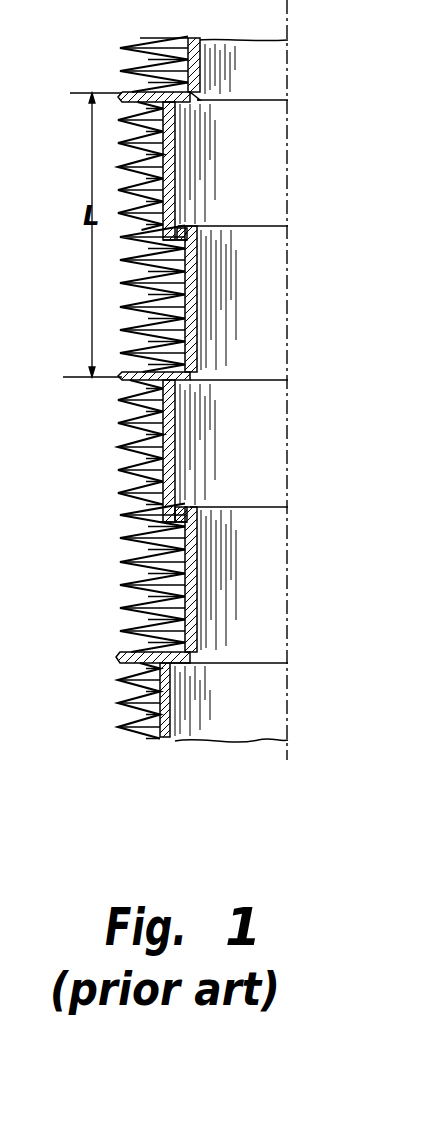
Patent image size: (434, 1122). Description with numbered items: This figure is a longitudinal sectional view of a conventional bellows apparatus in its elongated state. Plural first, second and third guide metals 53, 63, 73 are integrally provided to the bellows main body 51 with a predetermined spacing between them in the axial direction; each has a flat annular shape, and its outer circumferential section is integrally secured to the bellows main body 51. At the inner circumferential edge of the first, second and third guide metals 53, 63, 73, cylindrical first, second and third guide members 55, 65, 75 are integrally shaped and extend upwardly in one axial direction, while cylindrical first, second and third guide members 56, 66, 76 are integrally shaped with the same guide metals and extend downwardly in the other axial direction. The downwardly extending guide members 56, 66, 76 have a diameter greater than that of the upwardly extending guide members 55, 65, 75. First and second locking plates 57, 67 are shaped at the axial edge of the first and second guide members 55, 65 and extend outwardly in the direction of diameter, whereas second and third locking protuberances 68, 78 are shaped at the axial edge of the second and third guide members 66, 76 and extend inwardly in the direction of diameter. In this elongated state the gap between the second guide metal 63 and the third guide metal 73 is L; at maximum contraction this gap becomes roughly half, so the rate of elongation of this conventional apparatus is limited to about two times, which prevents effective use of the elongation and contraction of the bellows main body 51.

The bellows main body 51 is at (107, 515).
The first guide metal 53 is at (182, 666).
The first guide member 55 is at (191, 594).
The first guide member 56 is at (166, 720).
The first locking plate 57 is at (192, 509).
The second guide metal 63 is at (182, 384).
The second guide member 65 is at (191, 322).
The second guide member 66 is at (166, 460).
The second locking plate 67 is at (215, 228).
The second locking protuberance 68 is at (186, 518).
The third guide metal 73 is at (182, 103).
The third guide member 75 is at (192, 72).
The third guide member 76 is at (168, 196).
The third locking protuberance 78 is at (187, 234).